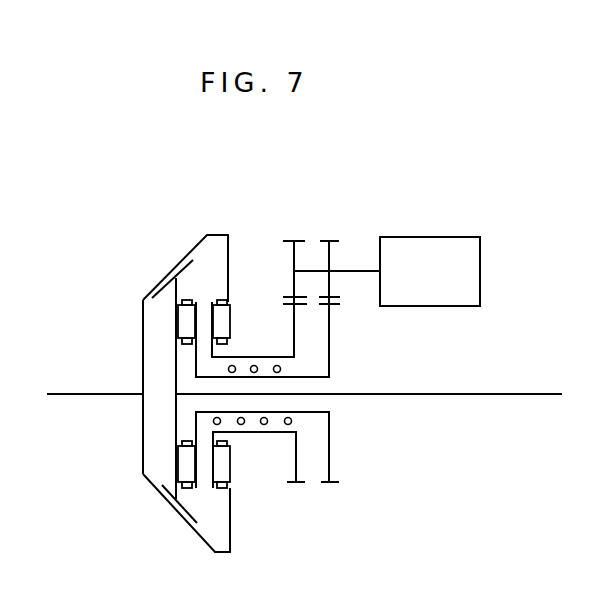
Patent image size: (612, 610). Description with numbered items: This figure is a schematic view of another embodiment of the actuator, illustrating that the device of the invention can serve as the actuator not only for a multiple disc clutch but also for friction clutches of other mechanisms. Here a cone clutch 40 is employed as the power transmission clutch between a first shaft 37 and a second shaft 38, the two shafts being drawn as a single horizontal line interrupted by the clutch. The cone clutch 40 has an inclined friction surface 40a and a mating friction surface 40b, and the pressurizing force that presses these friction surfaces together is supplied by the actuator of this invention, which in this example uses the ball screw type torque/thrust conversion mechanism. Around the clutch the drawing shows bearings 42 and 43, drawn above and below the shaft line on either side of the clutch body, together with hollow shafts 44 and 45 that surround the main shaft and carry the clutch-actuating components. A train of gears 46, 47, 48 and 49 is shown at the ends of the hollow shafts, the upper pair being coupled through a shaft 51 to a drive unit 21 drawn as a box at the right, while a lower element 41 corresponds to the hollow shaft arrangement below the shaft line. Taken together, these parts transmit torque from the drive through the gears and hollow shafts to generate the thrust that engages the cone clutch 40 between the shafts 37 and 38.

The motor 21 is at (452, 237).
The shaft 37 is at (88, 393).
The shaft 38 is at (472, 394).
The cone clutch 40 is at (136, 462).
The friction surface 40a is at (182, 262).
The friction surface 40b is at (163, 300).
The lower roller 41 is at (254, 424).
The bearing 42 is at (186, 312).
The bearing 43 is at (222, 325).
The hollow shaft 44 is at (280, 357).
The hollow shaft 45 is at (310, 377).
The gear 46 is at (293, 485).
The gear 47 is at (327, 485).
The gear 48 is at (298, 241).
The gear 49 is at (333, 241).
The motor shaft 51 is at (352, 273).